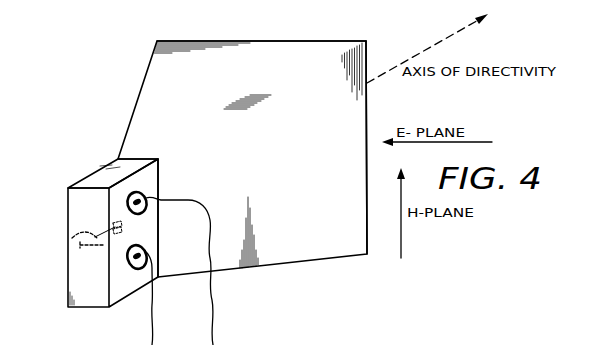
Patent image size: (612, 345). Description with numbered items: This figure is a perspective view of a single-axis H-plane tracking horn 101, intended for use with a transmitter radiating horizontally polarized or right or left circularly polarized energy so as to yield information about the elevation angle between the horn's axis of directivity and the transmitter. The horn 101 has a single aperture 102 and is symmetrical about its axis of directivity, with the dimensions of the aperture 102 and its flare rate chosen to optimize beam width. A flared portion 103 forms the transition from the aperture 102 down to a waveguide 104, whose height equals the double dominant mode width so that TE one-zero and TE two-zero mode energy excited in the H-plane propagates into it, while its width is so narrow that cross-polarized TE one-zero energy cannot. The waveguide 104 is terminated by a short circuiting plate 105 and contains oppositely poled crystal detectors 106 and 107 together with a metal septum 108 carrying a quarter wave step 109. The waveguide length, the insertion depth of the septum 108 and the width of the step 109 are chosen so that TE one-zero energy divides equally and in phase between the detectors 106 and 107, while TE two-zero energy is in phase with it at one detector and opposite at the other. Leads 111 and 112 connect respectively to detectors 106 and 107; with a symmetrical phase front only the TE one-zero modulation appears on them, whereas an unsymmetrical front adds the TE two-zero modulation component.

The single-axis H-plane tracking horn 101 is at (268, 294).
The aperture 102 is at (367, 62).
The flared portion 103 is at (266, 51).
The waveguide 104 is at (102, 179).
The short circuiting plate 105 is at (76, 216).
The crystal detector 106 is at (144, 196).
The crystal detector 107 is at (144, 250).
The metal septum 108 is at (71, 237).
The quarter wave step 109 is at (117, 221).
The lead 111 is at (214, 310).
The lead 112 is at (152, 333).